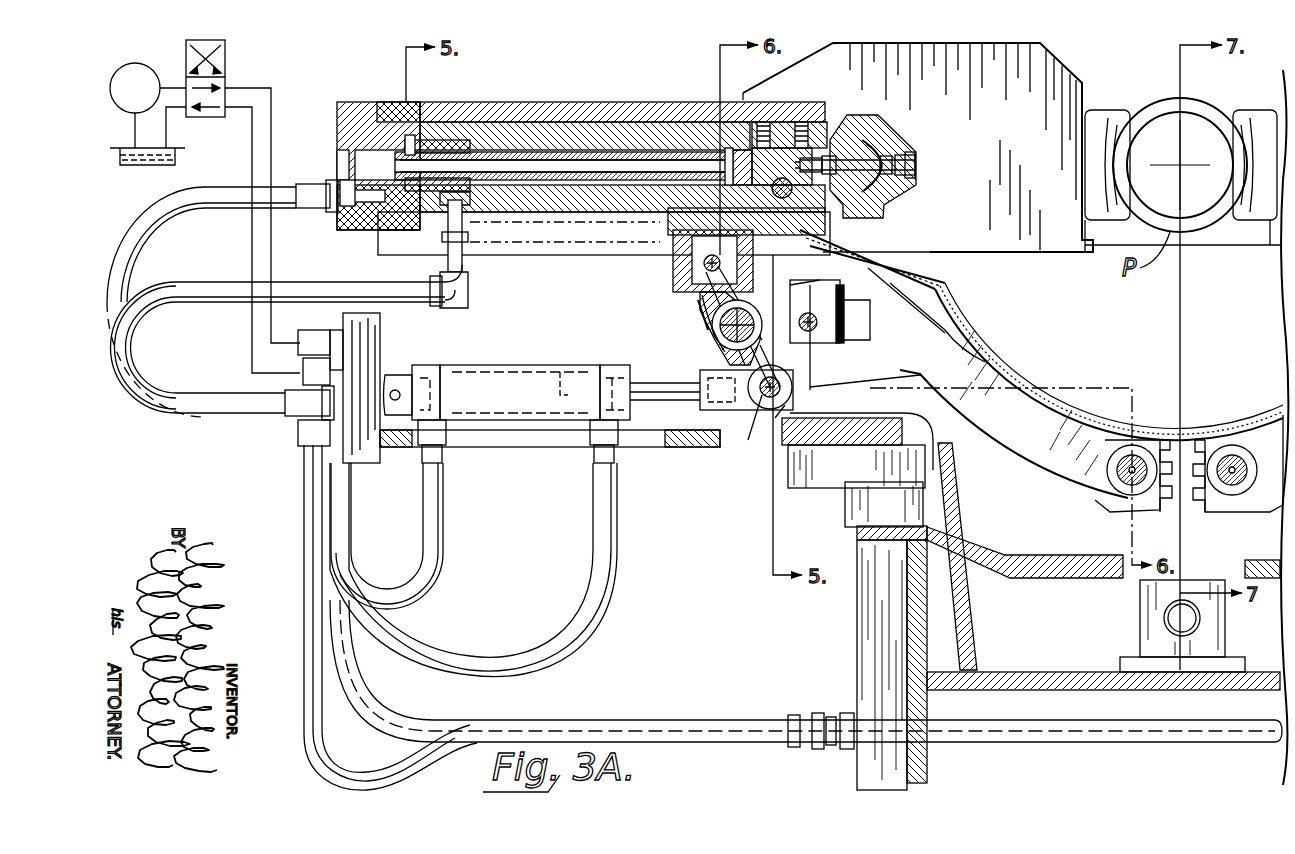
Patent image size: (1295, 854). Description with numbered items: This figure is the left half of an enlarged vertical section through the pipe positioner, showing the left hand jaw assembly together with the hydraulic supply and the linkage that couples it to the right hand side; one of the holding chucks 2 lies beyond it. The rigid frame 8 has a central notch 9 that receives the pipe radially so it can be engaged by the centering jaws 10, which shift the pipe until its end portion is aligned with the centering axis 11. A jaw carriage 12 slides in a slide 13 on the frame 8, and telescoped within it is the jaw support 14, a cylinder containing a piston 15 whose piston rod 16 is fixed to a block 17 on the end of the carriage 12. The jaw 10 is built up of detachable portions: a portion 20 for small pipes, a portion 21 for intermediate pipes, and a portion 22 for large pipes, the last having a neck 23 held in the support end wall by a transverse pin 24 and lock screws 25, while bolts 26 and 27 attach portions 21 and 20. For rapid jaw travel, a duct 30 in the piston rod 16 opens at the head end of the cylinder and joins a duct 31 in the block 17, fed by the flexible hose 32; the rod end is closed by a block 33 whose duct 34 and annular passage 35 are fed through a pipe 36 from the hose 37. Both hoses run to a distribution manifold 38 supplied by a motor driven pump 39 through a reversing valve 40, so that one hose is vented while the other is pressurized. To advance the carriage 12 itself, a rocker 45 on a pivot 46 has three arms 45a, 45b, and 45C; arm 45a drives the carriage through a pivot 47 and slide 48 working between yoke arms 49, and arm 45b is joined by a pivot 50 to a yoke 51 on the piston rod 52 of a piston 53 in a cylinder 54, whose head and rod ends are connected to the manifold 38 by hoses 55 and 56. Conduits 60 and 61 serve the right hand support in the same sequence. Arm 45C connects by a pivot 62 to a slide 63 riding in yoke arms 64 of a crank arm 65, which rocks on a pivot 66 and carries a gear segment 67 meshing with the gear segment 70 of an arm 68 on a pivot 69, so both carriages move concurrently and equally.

The holding chuck 2 is at (1060, 58).
The frame 8 is at (1055, 580).
The central notch 9 is at (1213, 363).
The centering jaw 10 is at (880, 128).
The centering axis 11 is at (1180, 165).
The jaw carriage 12 is at (395, 102).
The slide 13 is at (600, 245).
The jaw support 14 is at (626, 110).
The piston 15 is at (702, 105).
The piston rod 16 is at (590, 122).
The block 17 is at (358, 102).
The jaw portion for small diameter pipes 20 is at (890, 180).
The jaw portion for intermediate diameter pipes 21 is at (858, 228).
The jaw portion for larger diameter pipes 22 is at (815, 122).
The neck 23 is at (760, 160).
The transverse pin 24 is at (790, 200).
The lock screw 25 is at (798, 118).
The bolt 26 is at (876, 200).
The bolt 27 is at (915, 170).
The duct 30 is at (538, 153).
The duct 31 is at (358, 232).
The flexible hose 32 is at (182, 205).
The block 33 is at (455, 140).
The duct 34 is at (470, 212).
The annular passage 35 is at (480, 150).
The pipe 36 is at (462, 270).
The flexible hose 37 is at (170, 282).
The distribution manifold 38 is at (355, 463).
The motor driven pump 39 is at (152, 68).
The reversing valve 40 is at (222, 40).
The rocker 45 is at (718, 345).
The rocker arm 45a is at (715, 325).
The rocker arm 45b is at (758, 455).
The rocker arm 45C is at (848, 332).
The pivot 46 is at (718, 326).
The pivot 47 is at (700, 262).
The slide 48 is at (705, 300).
The yoke arms 49 is at (722, 264).
The pivot 50 is at (780, 392).
The yoke 51 is at (732, 440).
The piston rod 52 is at (660, 400).
The piston 53 is at (556, 365).
The cylinder 54 is at (492, 365).
The hose 55 is at (441, 540).
The hose 56 is at (614, 540).
The conduit 60 is at (322, 765).
The conduit 61 is at (413, 720).
The pivot 62 is at (804, 340).
The slide 63 is at (842, 322).
The yoke arms 64 is at (818, 292).
The crank arm 65 is at (1030, 448).
The pivot 66 is at (1115, 478).
The gear segment 67 is at (1165, 512).
The arm 68 is at (1262, 420).
The pivot 69 is at (1238, 485).
The gear segment 70 is at (1200, 512).